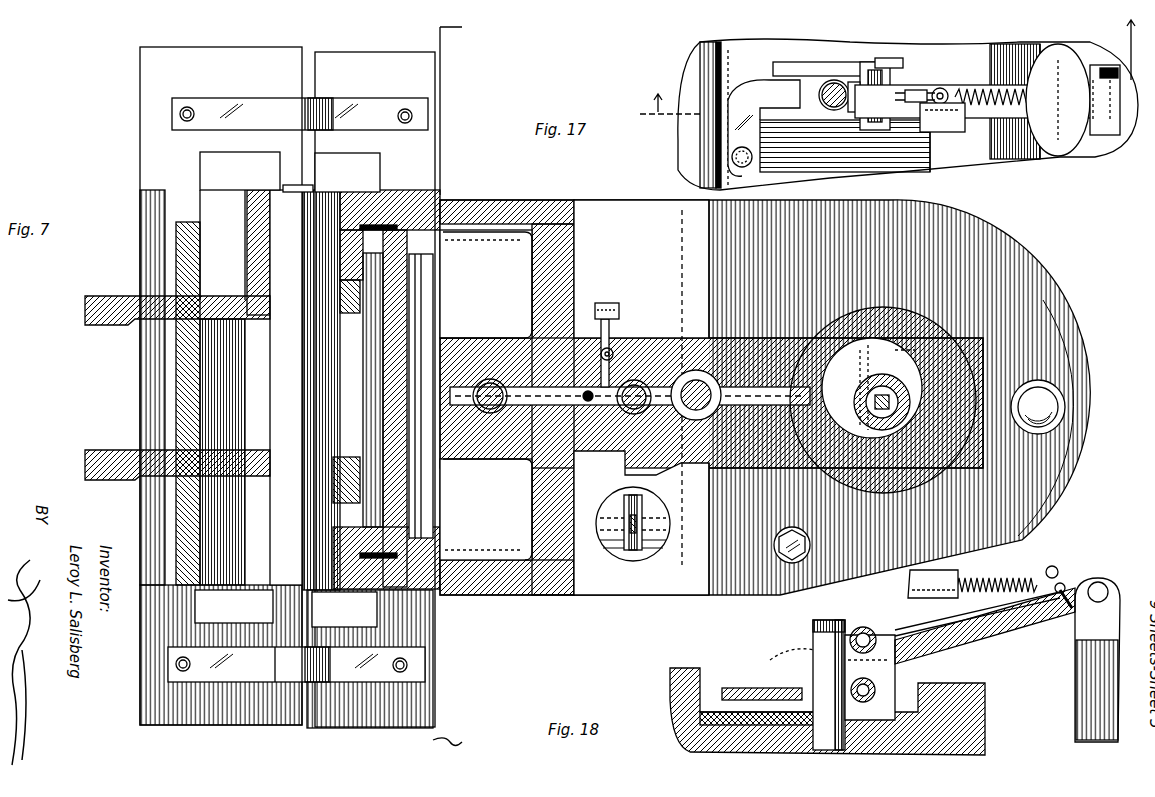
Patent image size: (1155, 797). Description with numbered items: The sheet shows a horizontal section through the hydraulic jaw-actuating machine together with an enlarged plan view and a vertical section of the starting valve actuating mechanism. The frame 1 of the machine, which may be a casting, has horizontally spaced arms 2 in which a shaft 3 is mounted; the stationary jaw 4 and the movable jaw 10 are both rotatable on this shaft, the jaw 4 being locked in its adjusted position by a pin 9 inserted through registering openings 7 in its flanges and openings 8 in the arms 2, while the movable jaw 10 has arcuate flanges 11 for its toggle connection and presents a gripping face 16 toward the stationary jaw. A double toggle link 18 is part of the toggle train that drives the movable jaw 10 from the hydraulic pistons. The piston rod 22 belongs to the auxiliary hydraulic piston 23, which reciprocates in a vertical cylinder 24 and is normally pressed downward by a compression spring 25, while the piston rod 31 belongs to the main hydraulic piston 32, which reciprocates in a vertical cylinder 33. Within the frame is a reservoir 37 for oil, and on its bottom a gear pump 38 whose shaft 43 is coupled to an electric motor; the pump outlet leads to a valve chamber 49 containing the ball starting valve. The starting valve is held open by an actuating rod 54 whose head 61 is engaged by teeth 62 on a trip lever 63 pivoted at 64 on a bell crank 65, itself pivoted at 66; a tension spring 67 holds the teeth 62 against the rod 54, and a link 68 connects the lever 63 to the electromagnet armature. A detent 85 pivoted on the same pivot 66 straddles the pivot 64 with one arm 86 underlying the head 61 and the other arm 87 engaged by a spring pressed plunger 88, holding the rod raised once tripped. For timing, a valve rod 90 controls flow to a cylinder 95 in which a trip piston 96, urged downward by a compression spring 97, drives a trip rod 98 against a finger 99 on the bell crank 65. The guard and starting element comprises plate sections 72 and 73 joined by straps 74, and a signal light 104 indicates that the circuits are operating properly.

In FIG. 7, the frame 1 is at (770, 408).
In FIG. 17, the frame 1 is at (690, 158).
In FIG. 18, the frame 1 is at (680, 728).
In FIG. 7, the arms 2 is at (388, 190).
In FIG. 7, the shaft 3 is at (328, 188).
In FIG. 7, the jaw 4 is at (436, 315).
In FIG. 7, the openings 7 is at (452, 508).
In FIG. 7, the openings 8 is at (445, 225).
In FIG. 7, the pin 9 is at (445, 300).
In FIG. 7, the movable jaw 10 is at (180, 398).
In FIG. 7, the arcuate flanges 11 is at (110, 320).
In FIG. 7, the gripping face 16 is at (236, 205).
In FIG. 7, the piston rod 22 is at (490, 379).
In FIG. 7, the auxiliary hydraulic piston 23 is at (480, 385).
In FIG. 7, the vertical cylinder 24 is at (498, 383).
In FIG. 7, the compression spring 25 is at (495, 460).
In FIG. 7, the piston rod 31 is at (700, 372).
In FIG. 7, the main hydraulic piston 32 is at (648, 505).
In FIG. 7, the vertical cylinder 33 is at (706, 470).
In FIG. 7, the reservoir 37 is at (800, 470).
In FIG. 7, the pump 38 is at (905, 363).
In FIG. 7, the shaft 43 is at (858, 390).
In FIG. 7, the valve chamber 49 is at (615, 430).
In FIG. 7, the actuating rod 54 is at (690, 370).
In FIG. 17, the actuating rod 54 is at (832, 80).
In FIG. 18, the actuating rod 54 is at (820, 680).
In FIG. 18, the head 61 is at (813, 624).
In FIG. 17, the teeth 62 is at (830, 110).
In FIG. 17, the trip lever 63 is at (1060, 158).
In FIG. 18, the trip lever 63 is at (1020, 630).
In FIG. 17, the pivot 64 is at (882, 65).
In FIG. 18, the pivot 64 is at (863, 626).
In FIG. 17, the bell crank 65 is at (782, 70).
In FIG. 18, the bell crank 65 is at (815, 660).
In FIG. 17, the pivot 66 is at (888, 70).
In FIG. 17, the tension spring 67 is at (982, 88).
In FIG. 18, the tension spring 67 is at (1015, 570).
In FIG. 7, the link 68 is at (622, 535).
In FIG. 17, the link 68 is at (1075, 110).
In FIG. 18, the link 68 is at (876, 690).
In FIG. 7, the plate section 72 is at (350, 728).
In FIG. 7, the plate section 73 is at (270, 728).
In FIG. 7, the straps 74 is at (290, 104).
In FIG. 17, the detent 85 is at (900, 95).
In FIG. 18, the detent 85 is at (895, 660).
In FIG. 17, the arm 86 is at (862, 80).
In FIG. 18, the arm 86 is at (850, 635).
In FIG. 17, the arm 87 is at (945, 103).
In FIG. 18, the arm 87 is at (905, 625).
In FIG. 17, the spring pressed plunger 88 is at (944, 88).
In FIG. 18, the spring pressed plunger 88 is at (955, 630).
In FIG. 7, the valve rod 90 is at (588, 389).
In FIG. 7, the cylinder 95 is at (602, 330).
In FIG. 7, the trip piston 96 is at (618, 308).
In FIG. 7, the compression spring 97 is at (615, 352).
In FIG. 7, the trip rod 98 is at (640, 382).
In FIG. 17, the trip rod 98 is at (700, 158).
In FIG. 17, the finger 99 is at (720, 178).
In FIG. 18, the finger 99 is at (736, 686).
In FIG. 7, the signal light 104 is at (1045, 395).
In FIG. 17, the double toggle link 18 is at (887, 80).